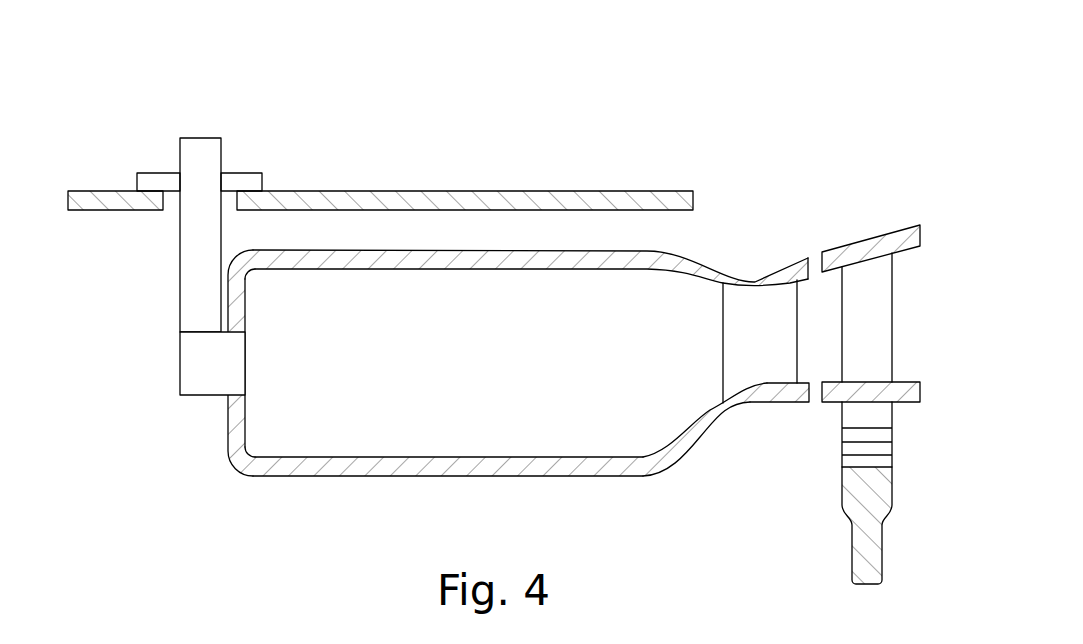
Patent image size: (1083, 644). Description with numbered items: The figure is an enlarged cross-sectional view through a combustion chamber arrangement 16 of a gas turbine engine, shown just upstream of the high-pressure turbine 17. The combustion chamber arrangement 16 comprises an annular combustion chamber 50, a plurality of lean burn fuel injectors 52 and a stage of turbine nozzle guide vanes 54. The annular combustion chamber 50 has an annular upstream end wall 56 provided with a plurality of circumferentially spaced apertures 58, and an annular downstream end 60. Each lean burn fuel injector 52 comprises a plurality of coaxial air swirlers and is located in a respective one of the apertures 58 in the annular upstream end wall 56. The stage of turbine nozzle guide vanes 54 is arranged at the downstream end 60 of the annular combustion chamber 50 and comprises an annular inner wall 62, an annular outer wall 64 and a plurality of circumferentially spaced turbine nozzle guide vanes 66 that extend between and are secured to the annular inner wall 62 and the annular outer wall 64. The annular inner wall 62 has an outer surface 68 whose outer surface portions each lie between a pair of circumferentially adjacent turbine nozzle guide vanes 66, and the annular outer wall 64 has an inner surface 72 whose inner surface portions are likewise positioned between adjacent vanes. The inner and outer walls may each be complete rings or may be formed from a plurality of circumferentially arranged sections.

The combustion chamber arrangement 16 is at (697, 216).
The high-pressure turbine 17 is at (923, 264).
The annular combustion chamber 50 is at (687, 260).
The lean burn fuel injector 52 is at (200, 205).
The stage of turbine nozzle guide vanes 54 is at (740, 345).
The annular upstream end wall 56 is at (245, 302).
The aperture 58 is at (235, 395).
The annular downstream end 60 is at (717, 407).
The annular inner wall 62 is at (760, 397).
The annular outer wall 64 is at (750, 273).
The turbine nozzle guide vane 66 is at (740, 313).
The outer surface 68 is at (787, 383).
The inner surface 72 is at (786, 286).